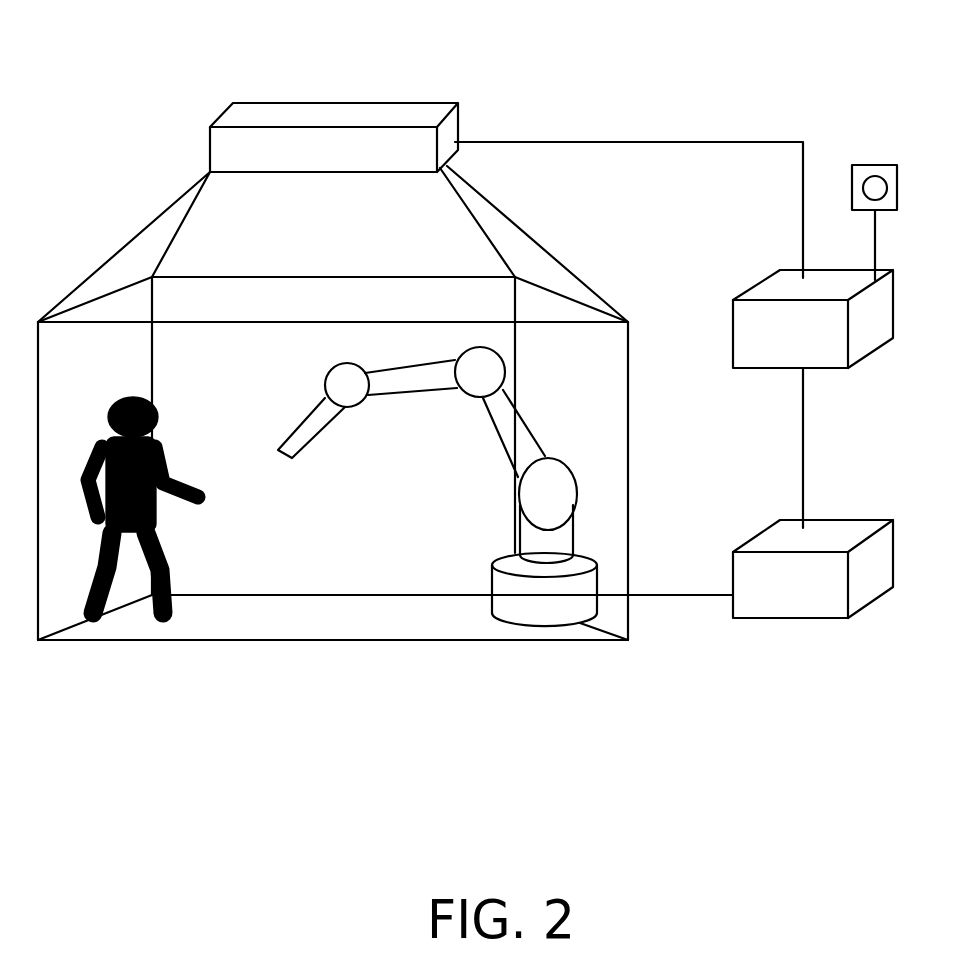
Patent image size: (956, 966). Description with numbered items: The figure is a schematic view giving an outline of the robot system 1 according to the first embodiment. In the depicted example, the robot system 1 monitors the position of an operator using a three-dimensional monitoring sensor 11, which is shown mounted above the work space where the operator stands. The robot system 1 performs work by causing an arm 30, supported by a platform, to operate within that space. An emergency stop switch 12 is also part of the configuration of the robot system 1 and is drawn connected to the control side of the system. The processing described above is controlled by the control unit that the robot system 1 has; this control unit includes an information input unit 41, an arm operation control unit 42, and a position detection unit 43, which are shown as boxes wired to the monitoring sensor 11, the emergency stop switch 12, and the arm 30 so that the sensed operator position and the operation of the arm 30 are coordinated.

The robot system 1 is at (851, 75).
The three-dimensional monitoring sensor 11 is at (390, 103).
The emergency stop switch 12 is at (872, 165).
The arm 30 is at (443, 358).
The information input unit 41 is at (813, 590).
The arm operation control unit 42 is at (743, 620).
The position detection unit 43 is at (822, 370).